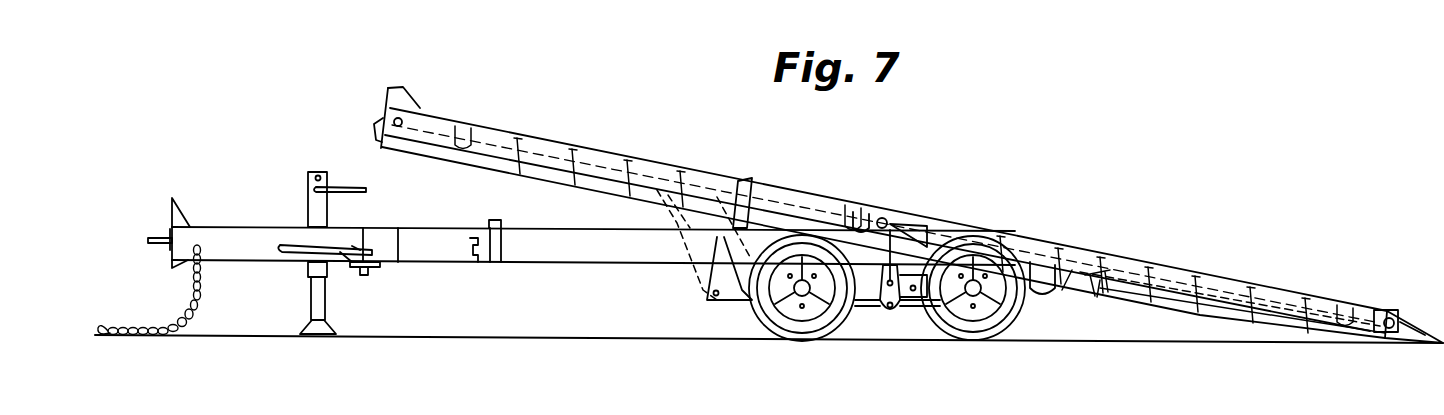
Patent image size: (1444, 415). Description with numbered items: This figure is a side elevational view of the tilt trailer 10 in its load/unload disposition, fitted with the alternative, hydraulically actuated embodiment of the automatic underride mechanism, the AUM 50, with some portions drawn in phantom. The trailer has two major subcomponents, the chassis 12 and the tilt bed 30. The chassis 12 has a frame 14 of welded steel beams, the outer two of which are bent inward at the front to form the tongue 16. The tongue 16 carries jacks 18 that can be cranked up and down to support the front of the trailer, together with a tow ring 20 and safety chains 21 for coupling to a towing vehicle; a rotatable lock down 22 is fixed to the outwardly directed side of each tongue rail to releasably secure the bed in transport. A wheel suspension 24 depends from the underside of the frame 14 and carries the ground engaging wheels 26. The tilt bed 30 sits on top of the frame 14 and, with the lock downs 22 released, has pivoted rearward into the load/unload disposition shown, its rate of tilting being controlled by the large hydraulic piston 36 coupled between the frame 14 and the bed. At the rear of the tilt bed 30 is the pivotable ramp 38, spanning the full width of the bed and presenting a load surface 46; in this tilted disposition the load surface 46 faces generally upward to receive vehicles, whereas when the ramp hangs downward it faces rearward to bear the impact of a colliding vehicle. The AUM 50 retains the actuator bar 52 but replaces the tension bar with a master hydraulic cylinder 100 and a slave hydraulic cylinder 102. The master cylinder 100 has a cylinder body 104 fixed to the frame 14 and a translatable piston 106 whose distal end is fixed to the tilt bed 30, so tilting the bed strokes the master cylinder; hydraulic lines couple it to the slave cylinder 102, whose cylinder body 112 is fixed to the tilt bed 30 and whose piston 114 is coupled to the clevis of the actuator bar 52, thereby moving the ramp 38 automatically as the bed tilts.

The tilt trailer 10 is at (628, 128).
The chassis 12 is at (463, 227).
The frame 14 is at (543, 262).
The tongue 16 is at (262, 262).
The jacks 18 is at (308, 172).
The tow ring 20 is at (147, 240).
The safety chains 21 is at (152, 327).
The rotatable lock down 22 is at (310, 250).
The wheel suspension 24 is at (890, 315).
The ground engaging wheels 26 is at (784, 327).
The tilt bed 30 is at (548, 140).
The hydraulic piston 36 is at (690, 273).
The pivotable ramp 38 is at (1397, 315).
The load surface 46 is at (1407, 320).
The AUM 50 is at (1170, 290).
The actuator bar 52 is at (1233, 288).
The master hydraulic cylinder 100 is at (780, 181).
The slave hydraulic cylinder 102 is at (1097, 270).
The cylinder body 104 is at (757, 243).
The translatable piston 106 is at (723, 217).
The cylinder body 112 is at (1072, 270).
The piston 114 is at (1097, 297).